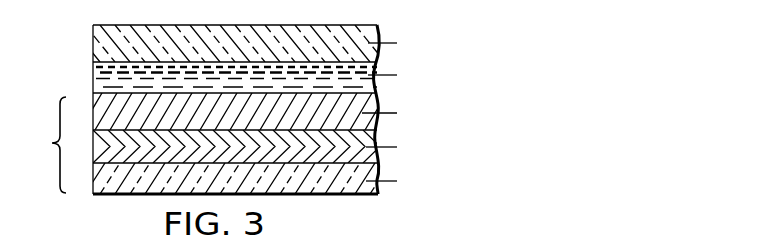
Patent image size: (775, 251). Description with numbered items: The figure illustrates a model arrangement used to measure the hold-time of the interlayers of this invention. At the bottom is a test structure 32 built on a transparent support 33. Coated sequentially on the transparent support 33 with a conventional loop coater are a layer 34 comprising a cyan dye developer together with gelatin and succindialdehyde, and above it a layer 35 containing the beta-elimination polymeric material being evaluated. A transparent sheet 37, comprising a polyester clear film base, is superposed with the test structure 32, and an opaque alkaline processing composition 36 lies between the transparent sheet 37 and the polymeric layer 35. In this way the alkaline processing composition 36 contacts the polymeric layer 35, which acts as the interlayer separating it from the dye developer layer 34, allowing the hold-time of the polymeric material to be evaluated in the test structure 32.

The test structure 32 is at (44, 145).
The transparent support 33 is at (108, 178).
The layer comprising a cyan dye developer 34 is at (117, 145).
The layer containing the polymeric material 35 is at (107, 112).
The opaque alkaline processing composition 36 is at (110, 75).
The transparent sheet 37 is at (107, 43).